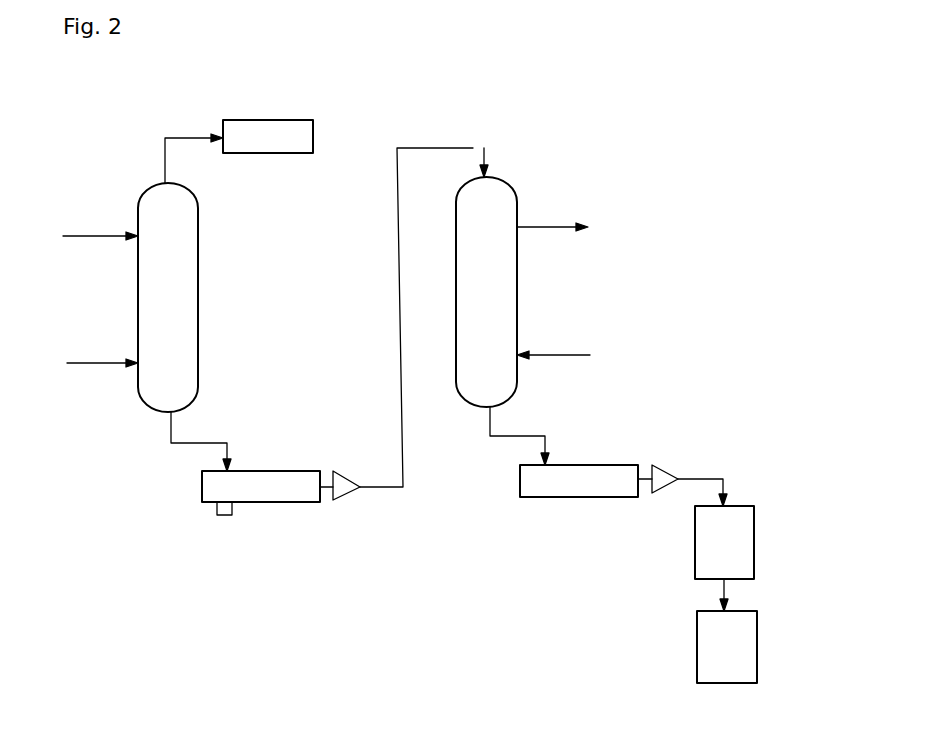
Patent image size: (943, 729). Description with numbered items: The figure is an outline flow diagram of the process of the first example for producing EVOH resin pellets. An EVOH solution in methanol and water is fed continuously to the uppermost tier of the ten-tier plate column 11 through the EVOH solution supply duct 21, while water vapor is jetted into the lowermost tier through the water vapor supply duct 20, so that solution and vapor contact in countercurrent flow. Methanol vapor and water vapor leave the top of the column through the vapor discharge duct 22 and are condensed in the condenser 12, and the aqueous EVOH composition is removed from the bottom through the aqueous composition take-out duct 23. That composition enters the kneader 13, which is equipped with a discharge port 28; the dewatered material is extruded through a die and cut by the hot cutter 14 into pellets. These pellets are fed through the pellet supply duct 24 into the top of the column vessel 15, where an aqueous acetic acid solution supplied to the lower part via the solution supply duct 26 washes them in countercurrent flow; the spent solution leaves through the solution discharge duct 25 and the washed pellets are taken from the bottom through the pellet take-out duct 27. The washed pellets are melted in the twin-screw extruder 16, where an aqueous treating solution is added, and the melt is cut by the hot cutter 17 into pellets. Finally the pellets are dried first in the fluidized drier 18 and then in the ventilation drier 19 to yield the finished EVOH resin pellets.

The plate column 11 is at (200, 297).
The condenser 12 is at (267, 118).
The kneader 13 is at (272, 468).
The hot cutter 14 is at (347, 470).
The column vessel 15 is at (517, 290).
The twin-screw extruder 16 is at (585, 463).
The hot cutter 17 is at (663, 465).
The fluidized drier 18 is at (754, 542).
The ventilation drier 19 is at (757, 645).
The water vapor supply duct 20 is at (102, 354).
The EVOH solution supply duct 21 is at (100, 226).
The vapor discharge duct 22 is at (180, 158).
The aqueous composition take-out duct 23 is at (186, 441).
The pellet supply duct 24 is at (497, 155).
The solution discharge duct 25 is at (552, 217).
The solution supply duct 26 is at (553, 345).
The pellet take-out duct 27 is at (504, 436).
The discharge port 28 is at (224, 515).